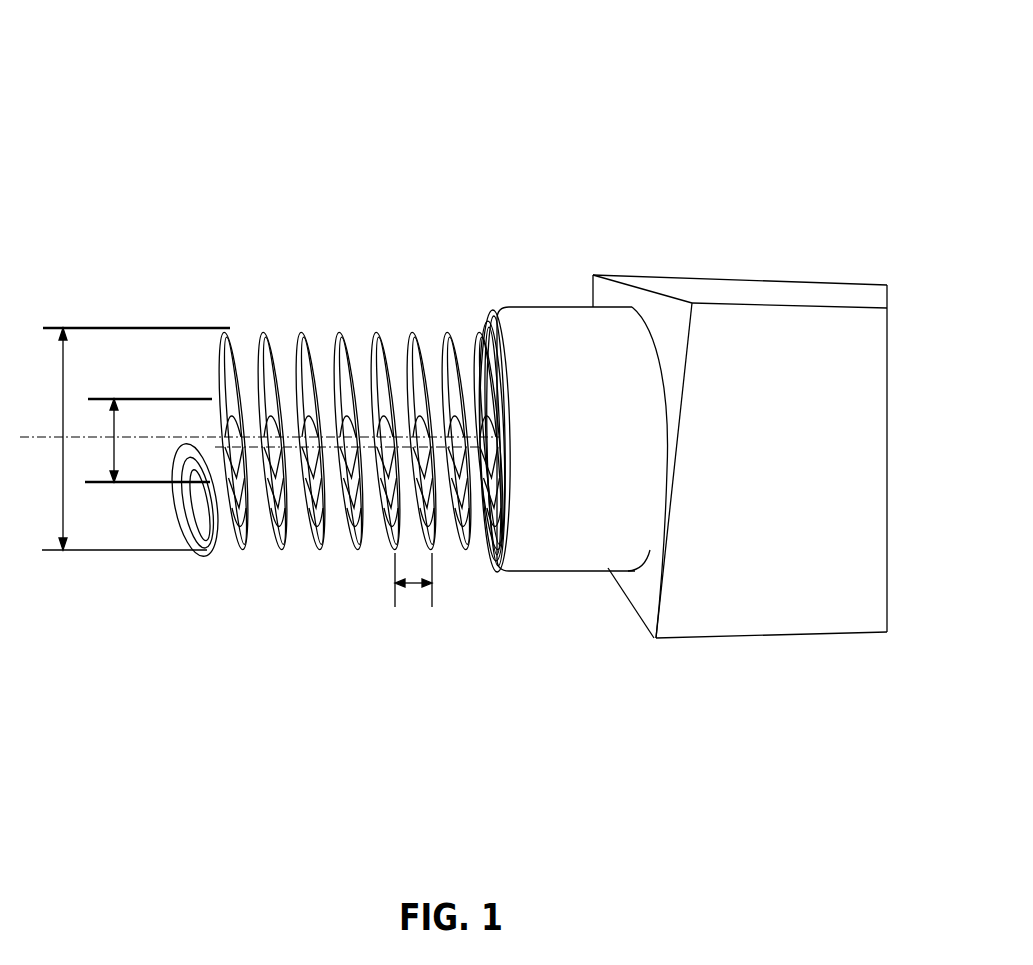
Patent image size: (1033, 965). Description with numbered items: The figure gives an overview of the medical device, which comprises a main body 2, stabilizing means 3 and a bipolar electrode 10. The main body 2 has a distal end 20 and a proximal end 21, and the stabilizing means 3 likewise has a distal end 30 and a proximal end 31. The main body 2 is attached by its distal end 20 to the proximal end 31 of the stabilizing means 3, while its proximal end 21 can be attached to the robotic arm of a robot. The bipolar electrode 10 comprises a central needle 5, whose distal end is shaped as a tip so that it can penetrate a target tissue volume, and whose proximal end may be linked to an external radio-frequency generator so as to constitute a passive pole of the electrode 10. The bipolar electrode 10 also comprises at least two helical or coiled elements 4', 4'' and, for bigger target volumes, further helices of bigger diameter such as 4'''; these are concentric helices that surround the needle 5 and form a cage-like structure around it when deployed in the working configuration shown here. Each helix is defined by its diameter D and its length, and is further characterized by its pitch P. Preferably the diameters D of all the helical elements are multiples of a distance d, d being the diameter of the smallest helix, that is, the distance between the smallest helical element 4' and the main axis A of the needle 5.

The main body 2 is at (762, 505).
The distal end of the main body 20 is at (595, 273).
The proximal end of the main body 21 is at (887, 475).
The stabilizing means 3 is at (555, 465).
The distal end of the stabilizing means 30 is at (500, 307).
The proximal end of the stabilizing means 31 is at (662, 490).
The central needle 5 is at (193, 440).
The bipolar electrode 10 is at (330, 327).
The helical element 4' is at (329, 516).
The helical element 4'' is at (253, 518).
The helical element 4''' is at (194, 563).
The diameter of the helix D is at (136, 439).
The diameter of the smallest helix d is at (148, 440).
The main axis of the needle A is at (260, 429).
The pitch of the helix P is at (413, 586).